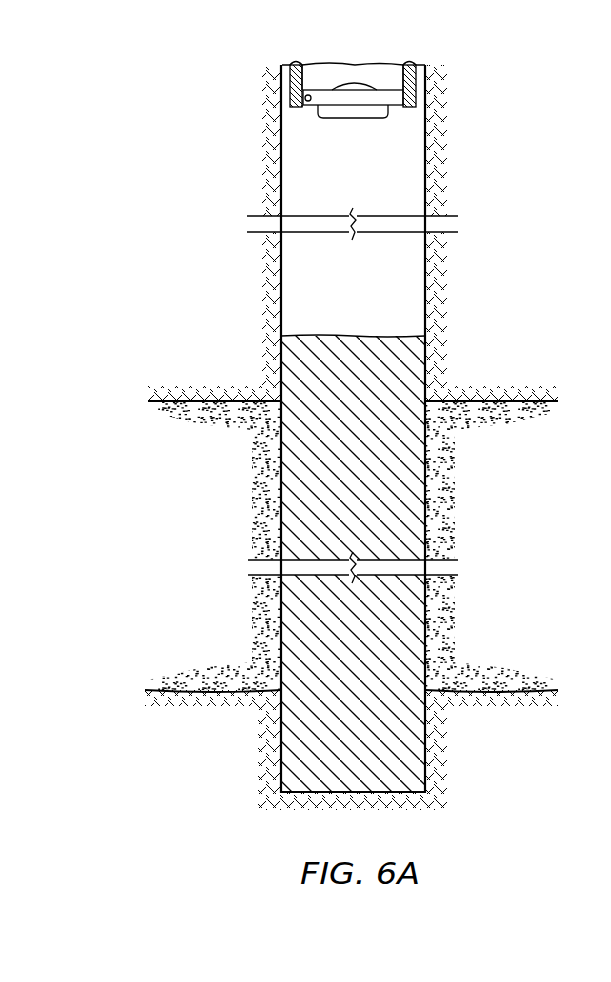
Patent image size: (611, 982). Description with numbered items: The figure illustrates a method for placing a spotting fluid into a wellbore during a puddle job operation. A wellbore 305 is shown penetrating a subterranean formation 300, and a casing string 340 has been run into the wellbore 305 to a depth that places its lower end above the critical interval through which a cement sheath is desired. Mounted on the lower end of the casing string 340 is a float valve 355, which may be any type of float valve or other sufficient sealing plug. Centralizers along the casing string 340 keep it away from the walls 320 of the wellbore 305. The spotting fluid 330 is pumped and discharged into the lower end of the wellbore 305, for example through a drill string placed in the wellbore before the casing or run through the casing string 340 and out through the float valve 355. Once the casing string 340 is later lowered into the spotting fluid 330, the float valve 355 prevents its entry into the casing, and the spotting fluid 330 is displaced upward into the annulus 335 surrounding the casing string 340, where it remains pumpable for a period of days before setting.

The subterranean formation 300 is at (213, 533).
The wellbore 305 is at (370, 297).
The walls of the wellbore 320 is at (426, 185).
The spotting fluid 330 is at (400, 336).
The annulus 335 is at (283, 79).
The casing string 340 is at (417, 77).
The float valve 355 is at (348, 118).